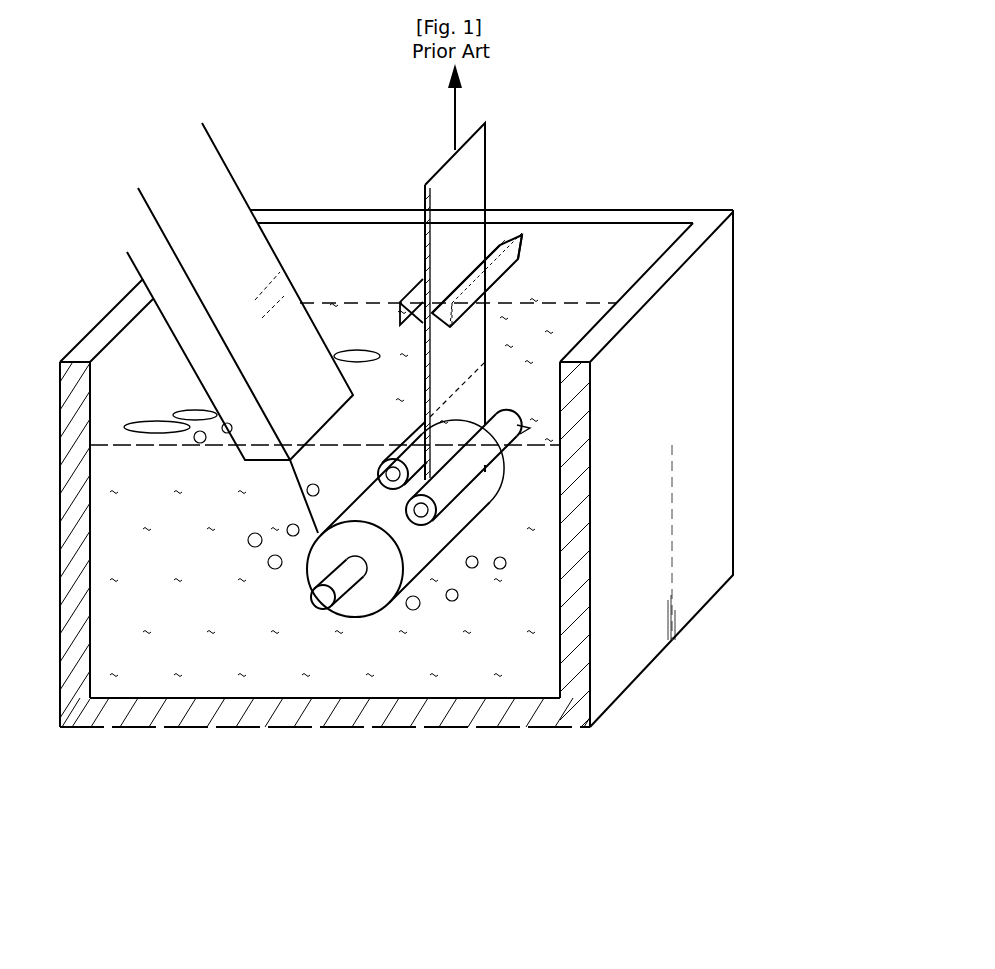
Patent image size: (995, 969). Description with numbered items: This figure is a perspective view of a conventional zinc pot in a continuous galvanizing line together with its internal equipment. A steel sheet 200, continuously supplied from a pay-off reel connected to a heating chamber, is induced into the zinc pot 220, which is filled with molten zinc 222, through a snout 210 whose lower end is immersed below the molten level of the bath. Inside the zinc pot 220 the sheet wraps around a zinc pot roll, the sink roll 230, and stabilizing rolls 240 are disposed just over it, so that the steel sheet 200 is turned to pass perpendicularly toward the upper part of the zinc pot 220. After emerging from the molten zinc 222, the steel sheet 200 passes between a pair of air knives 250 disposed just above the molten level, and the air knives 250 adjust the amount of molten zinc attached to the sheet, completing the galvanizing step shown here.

The steel sheet 200 is at (475, 182).
The snout 210 is at (257, 265).
The zinc pot 220 is at (704, 427).
The molten zinc 222 is at (518, 637).
The sink roll 230 is at (367, 600).
The stabilizing rolls 240 is at (500, 445).
The air knives 250 is at (508, 252).